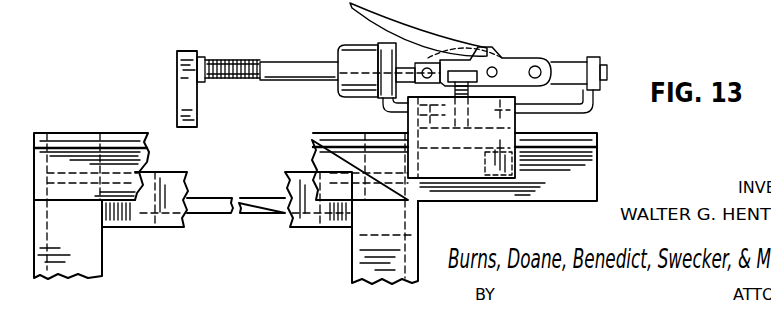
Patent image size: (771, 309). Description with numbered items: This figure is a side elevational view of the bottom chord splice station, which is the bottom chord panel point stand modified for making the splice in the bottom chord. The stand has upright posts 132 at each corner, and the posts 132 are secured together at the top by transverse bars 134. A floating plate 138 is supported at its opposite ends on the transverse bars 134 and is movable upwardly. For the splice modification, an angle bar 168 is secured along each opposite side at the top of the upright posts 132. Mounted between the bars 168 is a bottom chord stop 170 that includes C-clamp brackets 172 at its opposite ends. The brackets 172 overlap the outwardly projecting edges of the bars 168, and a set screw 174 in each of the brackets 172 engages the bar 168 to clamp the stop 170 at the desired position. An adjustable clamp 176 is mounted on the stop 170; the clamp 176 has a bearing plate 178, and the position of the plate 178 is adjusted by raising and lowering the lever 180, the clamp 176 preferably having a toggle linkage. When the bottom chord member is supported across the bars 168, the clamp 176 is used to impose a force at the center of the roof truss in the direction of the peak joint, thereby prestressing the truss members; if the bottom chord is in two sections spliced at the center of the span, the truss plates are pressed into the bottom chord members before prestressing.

The upright posts 132 is at (90, 263).
The transverse bars 134 is at (163, 178).
The floating plate 138 is at (223, 197).
The angle bar 168 is at (117, 153).
The bottom chord stop 170 is at (407, 127).
The C-clamp brackets 172 is at (500, 166).
The set screw 174 is at (463, 68).
The adjustable clamp 176 is at (514, 54).
The bearing plate 178 is at (190, 51).
The lever 180 is at (412, 33).